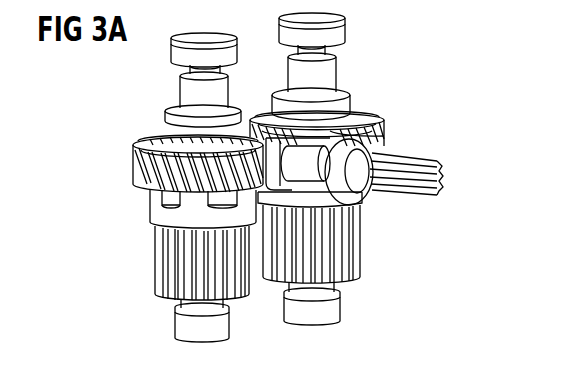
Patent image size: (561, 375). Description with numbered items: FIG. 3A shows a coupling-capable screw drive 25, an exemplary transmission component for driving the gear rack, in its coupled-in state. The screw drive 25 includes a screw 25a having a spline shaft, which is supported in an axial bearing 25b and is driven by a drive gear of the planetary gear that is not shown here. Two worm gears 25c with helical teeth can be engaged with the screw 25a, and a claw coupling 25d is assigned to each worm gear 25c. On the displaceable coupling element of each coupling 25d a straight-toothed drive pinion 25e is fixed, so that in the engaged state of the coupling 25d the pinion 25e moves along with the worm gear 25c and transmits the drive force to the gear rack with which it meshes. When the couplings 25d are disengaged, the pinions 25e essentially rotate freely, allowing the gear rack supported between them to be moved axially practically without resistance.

The coupling-capable screw drive 25 is at (428, 121).
The screw 25a is at (338, 116).
The axial bearing 25b is at (376, 196).
The worm gear 25c is at (135, 170).
The claw coupling 25d is at (137, 220).
The straight-toothed drive pinion 25e is at (158, 278).